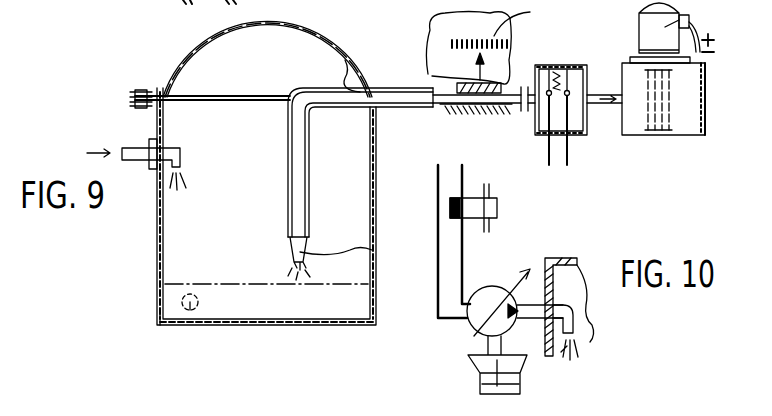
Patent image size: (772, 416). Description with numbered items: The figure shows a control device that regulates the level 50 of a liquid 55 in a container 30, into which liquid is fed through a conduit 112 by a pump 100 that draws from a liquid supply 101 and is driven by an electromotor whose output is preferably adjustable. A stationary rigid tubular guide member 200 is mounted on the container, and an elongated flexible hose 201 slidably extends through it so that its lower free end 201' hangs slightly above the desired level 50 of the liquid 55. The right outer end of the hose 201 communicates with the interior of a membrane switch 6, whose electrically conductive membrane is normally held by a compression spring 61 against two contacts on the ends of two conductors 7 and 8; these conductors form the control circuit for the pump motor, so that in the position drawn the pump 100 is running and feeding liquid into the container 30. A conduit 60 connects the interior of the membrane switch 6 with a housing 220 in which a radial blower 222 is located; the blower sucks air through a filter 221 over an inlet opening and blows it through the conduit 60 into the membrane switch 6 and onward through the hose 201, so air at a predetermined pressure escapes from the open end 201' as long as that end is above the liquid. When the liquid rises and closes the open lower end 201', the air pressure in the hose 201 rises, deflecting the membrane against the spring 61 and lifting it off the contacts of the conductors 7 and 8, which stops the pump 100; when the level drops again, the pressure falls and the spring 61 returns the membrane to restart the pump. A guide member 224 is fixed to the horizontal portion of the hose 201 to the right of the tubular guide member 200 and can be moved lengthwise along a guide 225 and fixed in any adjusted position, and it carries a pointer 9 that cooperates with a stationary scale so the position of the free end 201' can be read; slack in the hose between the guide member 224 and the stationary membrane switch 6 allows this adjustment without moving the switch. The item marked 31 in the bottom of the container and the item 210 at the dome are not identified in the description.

In FIG. 9, the container 30 is at (158, 232).
In FIG. 10, the container 30 is at (573, 259).
In FIG. 9, the level sensor 31 is at (190, 318).
In FIG. 9, the level 50 is at (243, 322).
In FIG. 9, the liquid 55 is at (157, 311).
In FIG. 9, the conduit 112 is at (130, 143).
In FIG. 10, the conduit 112 is at (590, 322).
In FIG. 9, the tubular guide member 200 is at (343, 58).
In FIG. 9, the dome 210 is at (385, 0).
In FIG. 9, the flexible hose 201 is at (461, 127).
In FIG. 9, the lower free end 201' is at (360, 267).
In FIG. 9, the guide member 224 is at (488, 108).
In FIG. 9, the guide 225 is at (454, 110).
In FIG. 9, the pointer 9 is at (430, 73).
In FIG. 9, the membrane switch 6 is at (555, 66).
In FIG. 9, the compression spring 61 is at (570, 70).
In FIG. 9, the conduit 60 is at (600, 90).
In FIG. 9, the conductor 7 is at (549, 172).
In FIG. 9, the conductor 8 is at (568, 154).
In FIG. 9, the housing 220 is at (694, 137).
In FIG. 9, the filter 221 is at (708, 78).
In FIG. 9, the radial blower 222 is at (648, 135).
In FIG. 9, the pump 100 is at (475, 322).
In FIG. 9, the liquid supply 101 is at (519, 384).